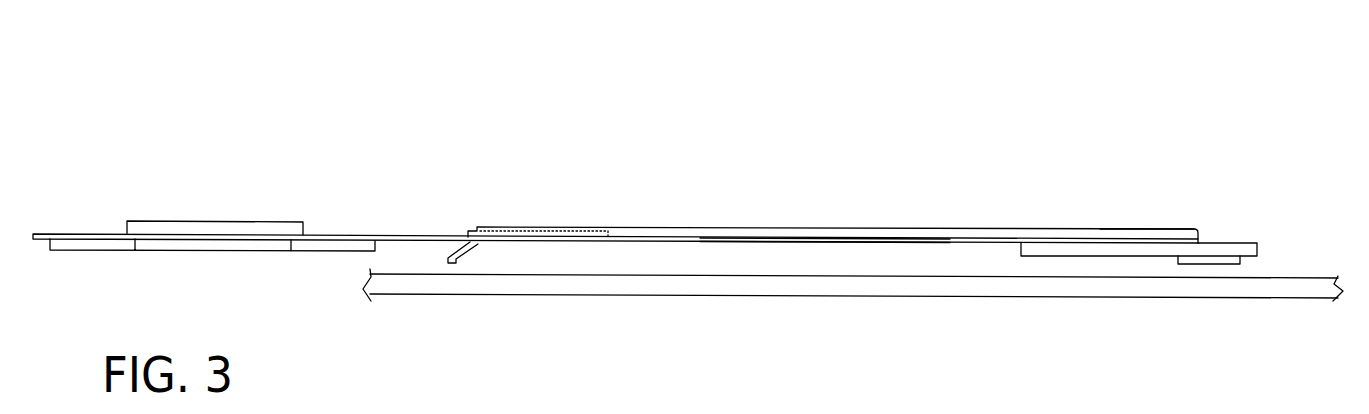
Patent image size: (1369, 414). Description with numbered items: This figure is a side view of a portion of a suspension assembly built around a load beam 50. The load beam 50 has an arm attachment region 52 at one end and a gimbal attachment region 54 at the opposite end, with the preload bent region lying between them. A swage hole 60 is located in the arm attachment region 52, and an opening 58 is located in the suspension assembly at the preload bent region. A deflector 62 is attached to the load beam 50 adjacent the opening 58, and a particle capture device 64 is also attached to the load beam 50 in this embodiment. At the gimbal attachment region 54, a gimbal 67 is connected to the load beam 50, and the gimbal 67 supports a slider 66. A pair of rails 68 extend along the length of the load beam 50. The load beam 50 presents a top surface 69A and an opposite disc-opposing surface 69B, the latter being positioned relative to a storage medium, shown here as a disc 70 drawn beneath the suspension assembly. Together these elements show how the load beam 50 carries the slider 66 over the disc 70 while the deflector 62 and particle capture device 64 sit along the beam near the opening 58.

The load beam 50 is at (917, 129).
The arm attachment region 52 is at (320, 271).
The gimbal attachment region 54 is at (1160, 221).
The opening 58 is at (436, 237).
The swage hole 60 is at (265, 221).
The deflector 62 is at (465, 256).
The particle capture device 64 is at (540, 231).
The slider 66 is at (1217, 262).
The gimbal 67 is at (1248, 243).
The rails 68 is at (733, 228).
The top surface 69A is at (828, 221).
The disc-opposing surface 69B is at (820, 261).
The disc 70 is at (958, 298).